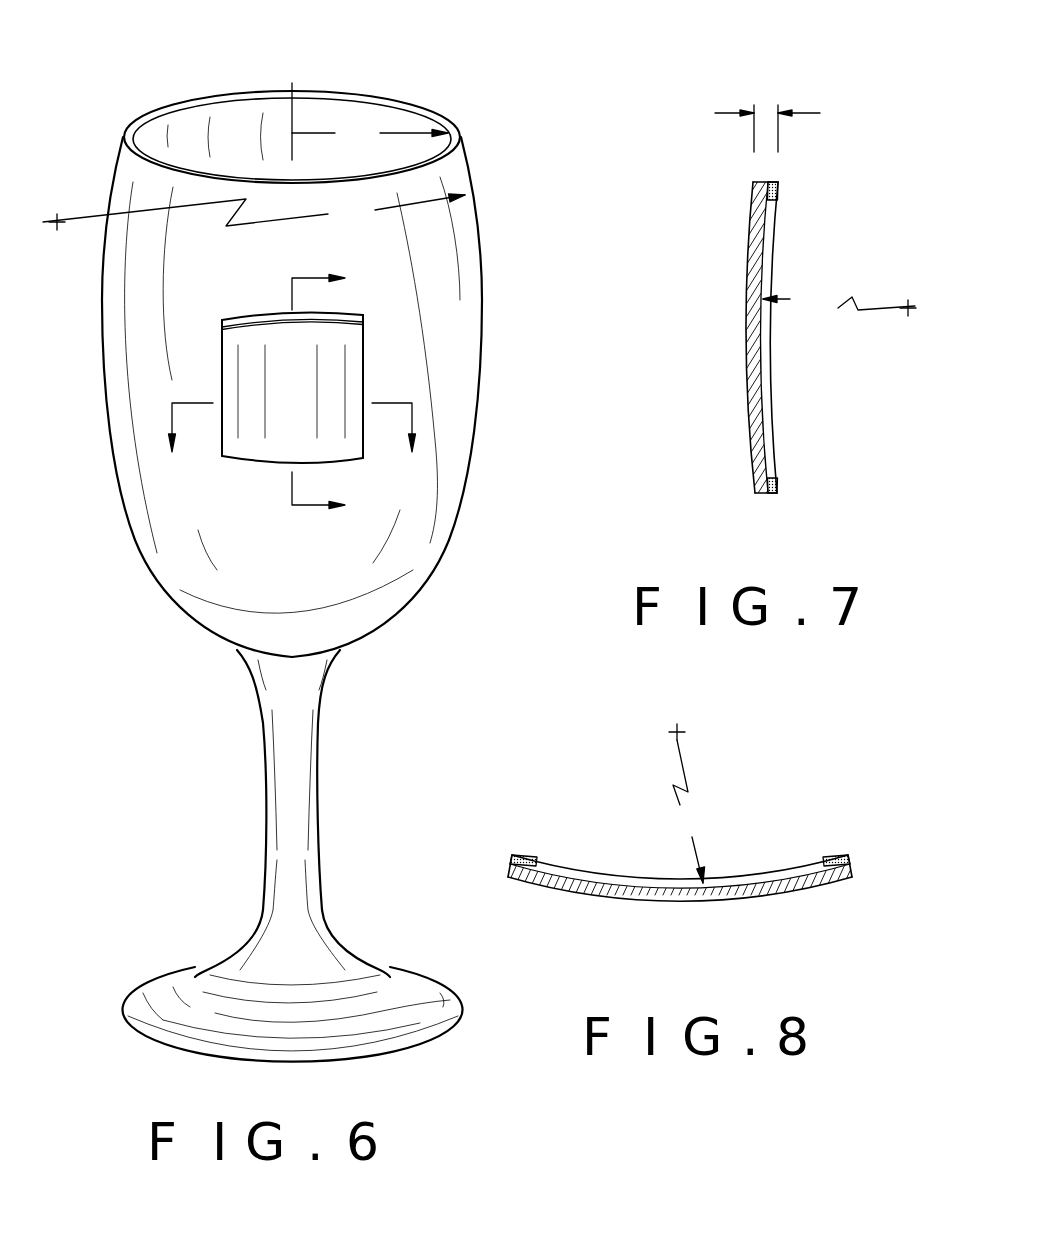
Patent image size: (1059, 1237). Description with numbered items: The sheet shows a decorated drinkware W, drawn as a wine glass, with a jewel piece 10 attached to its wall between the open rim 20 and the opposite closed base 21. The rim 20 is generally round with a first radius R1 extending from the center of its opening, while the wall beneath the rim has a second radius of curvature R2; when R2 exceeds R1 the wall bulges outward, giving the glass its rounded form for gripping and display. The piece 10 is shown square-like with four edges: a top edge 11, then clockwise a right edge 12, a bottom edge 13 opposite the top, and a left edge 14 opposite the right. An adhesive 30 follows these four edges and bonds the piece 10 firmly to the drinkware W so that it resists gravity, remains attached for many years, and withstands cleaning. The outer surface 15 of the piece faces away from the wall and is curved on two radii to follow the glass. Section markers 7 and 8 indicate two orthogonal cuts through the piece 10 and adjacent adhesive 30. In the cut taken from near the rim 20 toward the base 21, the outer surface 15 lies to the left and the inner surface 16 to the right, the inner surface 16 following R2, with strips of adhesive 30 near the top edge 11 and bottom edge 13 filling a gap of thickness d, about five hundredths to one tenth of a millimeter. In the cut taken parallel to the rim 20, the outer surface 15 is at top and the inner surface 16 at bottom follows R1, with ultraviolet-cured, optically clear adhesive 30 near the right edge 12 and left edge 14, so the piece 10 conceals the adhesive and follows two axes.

In FIG. 6, the piece 10 is at (295, 381).
In FIG. 7, the piece 10 is at (773, 347).
In FIG. 8, the piece 10 is at (692, 868).
In FIG. 6, the top edge 11 is at (350, 315).
In FIG. 7, the top edge 11 is at (757, 182).
In FIG. 6, the right edge 12 is at (363, 380).
In FIG. 8, the right edge 12 is at (850, 868).
In FIG. 6, the bottom edge 13 is at (253, 457).
In FIG. 7, the bottom edge 13 is at (762, 497).
In FIG. 6, the left edge 14 is at (222, 384).
In FIG. 8, the left edge 14 is at (510, 870).
In FIG. 6, the outer surface 15 is at (283, 362).
In FIG. 7, the outer surface 15 is at (745, 342).
In FIG. 8, the outer surface 15 is at (730, 906).
In FIG. 7, the inner surface 16 is at (762, 387).
In FIG. 8, the inner surface 16 is at (733, 888).
In FIG. 6, the rim 20 is at (207, 97).
In FIG. 6, the base 21 is at (160, 605).
In FIG. 6, the adhesive 30 is at (252, 318).
In FIG. 7, the adhesive 30 is at (778, 190).
In FIG. 8, the adhesive 30 is at (520, 853).
In FIG. 6, the drinkware W is at (102, 258).
In FIG. 6, the first radius R1 is at (370, 121).
In FIG. 8, the first radius R1 is at (688, 803).
In FIG. 6, the second radius R2 is at (254, 214).
In FIG. 7, the second radius R2 is at (839, 308).
In FIG. 7, the thickness of the gap d is at (767, 127).
In FIG. 6, the section line for FIG. 7 is at (330, 393).
In FIG. 6, the section line for FIG. 8 is at (292, 443).